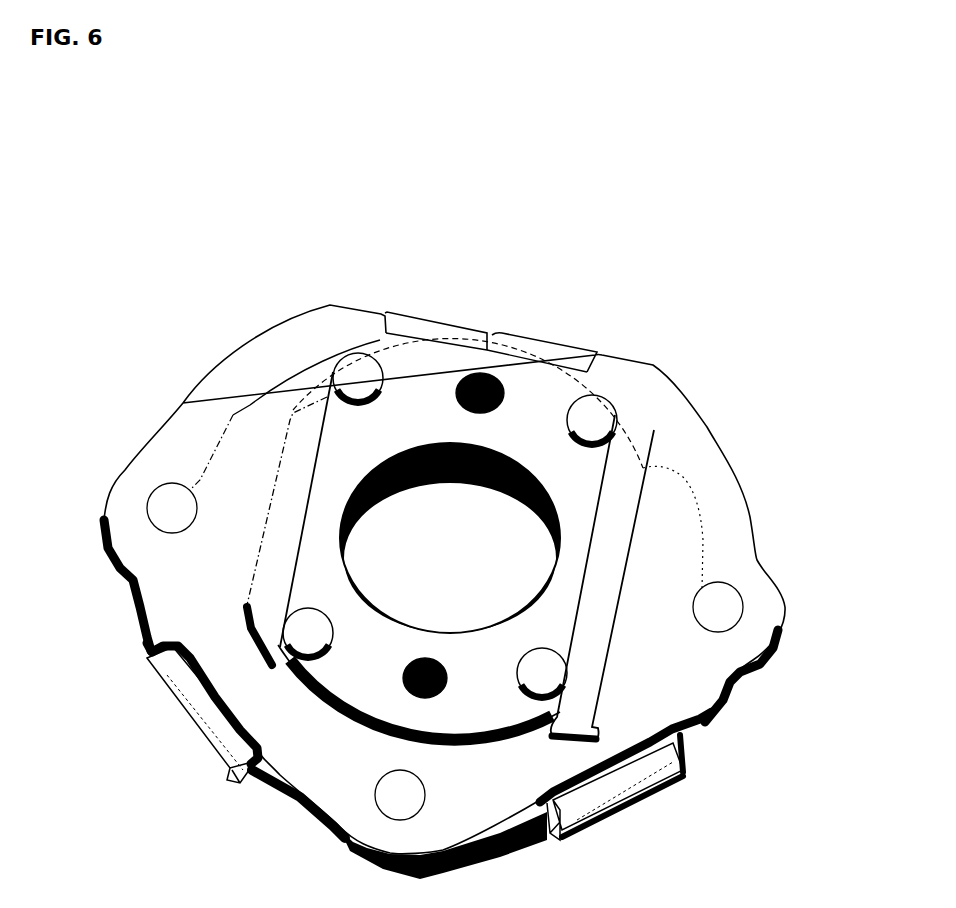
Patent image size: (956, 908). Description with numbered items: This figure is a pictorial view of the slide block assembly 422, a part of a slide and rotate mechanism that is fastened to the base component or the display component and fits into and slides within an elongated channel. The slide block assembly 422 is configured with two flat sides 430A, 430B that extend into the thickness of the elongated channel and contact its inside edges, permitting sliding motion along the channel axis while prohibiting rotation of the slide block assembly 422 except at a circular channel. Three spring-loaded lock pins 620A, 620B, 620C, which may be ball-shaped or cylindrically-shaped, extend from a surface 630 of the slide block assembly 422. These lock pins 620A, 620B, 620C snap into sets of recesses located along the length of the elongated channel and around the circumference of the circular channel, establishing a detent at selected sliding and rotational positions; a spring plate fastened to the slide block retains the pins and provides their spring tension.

The slide block assembly 422 is at (694, 134).
The flat side 430A is at (281, 450).
The flat side 430B is at (640, 457).
The spring-loaded lock pin 620A is at (158, 489).
The spring-loaded lock pin 620B is at (376, 803).
The spring-loaded lock pin 620C is at (740, 598).
The surface 630 is at (758, 528).